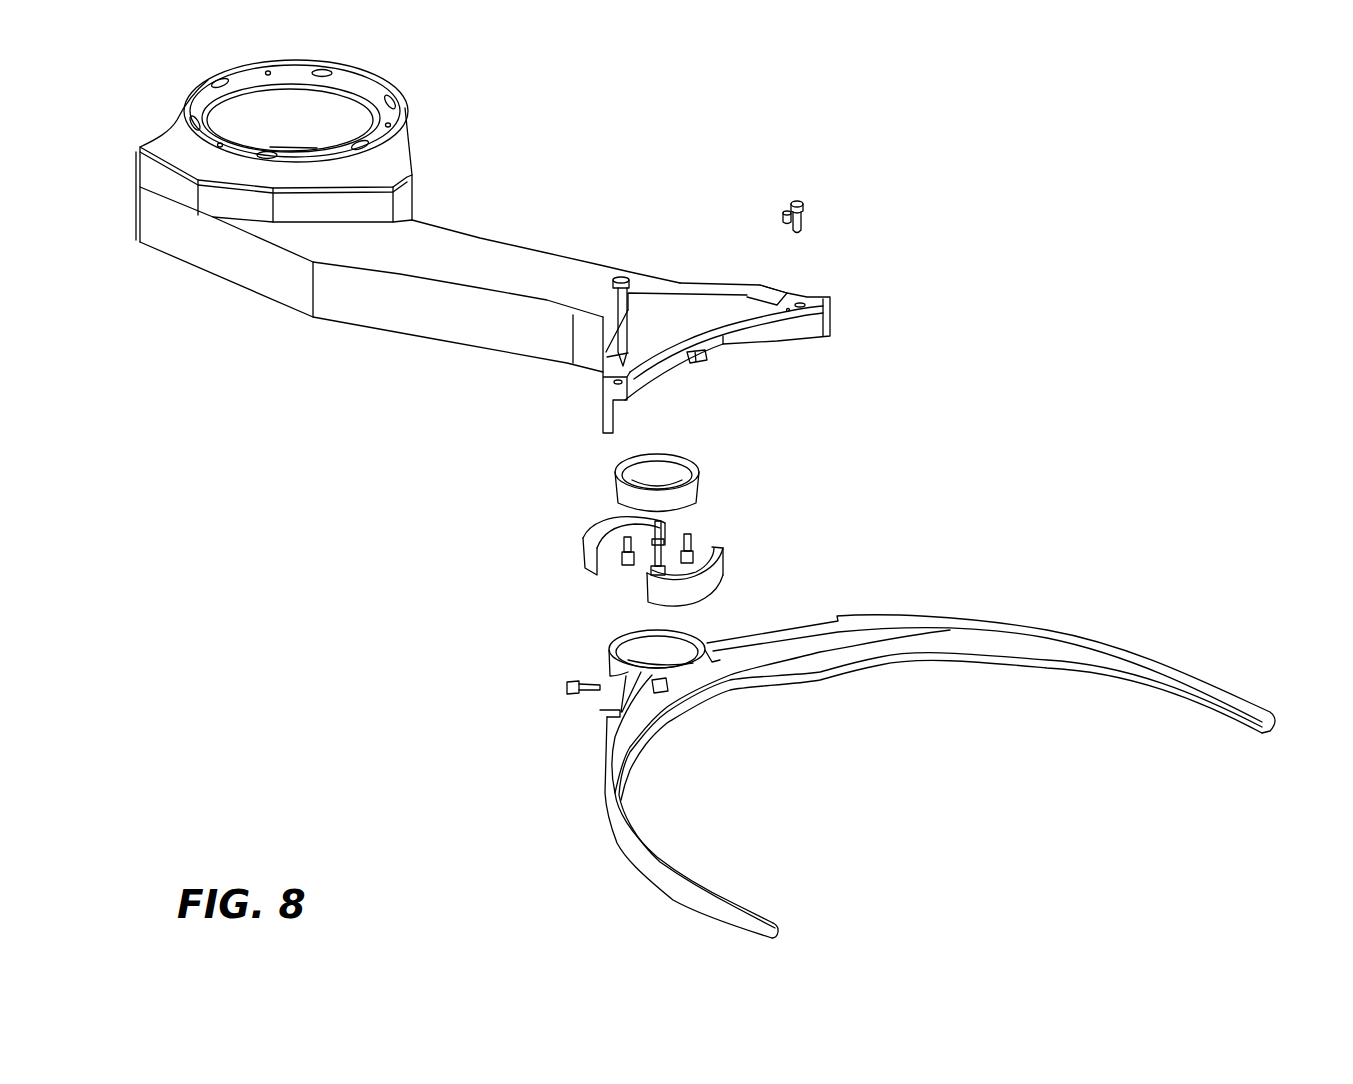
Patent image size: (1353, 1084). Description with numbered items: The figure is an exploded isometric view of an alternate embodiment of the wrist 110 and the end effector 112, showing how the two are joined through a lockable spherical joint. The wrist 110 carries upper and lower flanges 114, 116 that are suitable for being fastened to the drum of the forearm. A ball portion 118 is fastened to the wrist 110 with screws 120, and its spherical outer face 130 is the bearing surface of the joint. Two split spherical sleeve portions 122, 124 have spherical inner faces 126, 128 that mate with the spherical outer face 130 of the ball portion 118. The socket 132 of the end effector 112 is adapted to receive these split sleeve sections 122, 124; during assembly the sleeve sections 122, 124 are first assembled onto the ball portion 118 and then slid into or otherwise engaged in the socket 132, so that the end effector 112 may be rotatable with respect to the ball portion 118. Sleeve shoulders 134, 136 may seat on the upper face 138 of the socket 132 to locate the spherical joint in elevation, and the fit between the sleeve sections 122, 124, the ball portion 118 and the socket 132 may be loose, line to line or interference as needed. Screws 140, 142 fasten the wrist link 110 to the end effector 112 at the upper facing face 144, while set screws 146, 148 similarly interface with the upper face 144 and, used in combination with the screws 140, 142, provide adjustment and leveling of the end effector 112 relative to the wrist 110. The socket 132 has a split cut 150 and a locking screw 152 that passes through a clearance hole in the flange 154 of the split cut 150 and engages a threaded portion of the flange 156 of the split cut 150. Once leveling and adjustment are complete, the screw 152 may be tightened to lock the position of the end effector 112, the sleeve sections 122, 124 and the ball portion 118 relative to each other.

The wrist 110 is at (470, 245).
The end effector 112 is at (1150, 652).
The upper flange 114 is at (368, 71).
The lower flange 116 is at (270, 142).
The ball portion 118 is at (692, 455).
The screws 120 is at (686, 533).
The split spherical sleeve portion 122 is at (580, 550).
The split spherical sleeve portion 124 is at (727, 582).
The spherical inner face 126 is at (710, 546).
The spherical inner face 128 is at (610, 514).
The spherical outer face 130 is at (700, 493).
The socket 132 is at (626, 650).
The sleeve shoulder 134 is at (597, 530).
The sleeve shoulder 136 is at (727, 555).
The upper face 138 is at (698, 632).
The screw 140 is at (805, 203).
The screw 142 is at (613, 281).
The upper facing face 144 is at (605, 712).
The set screw 146 is at (783, 212).
The set screw 148 is at (624, 278).
The split cut 150 is at (658, 674).
The locking screw 152 is at (567, 687).
The flange 154 is at (614, 670).
The flange 156 is at (640, 703).